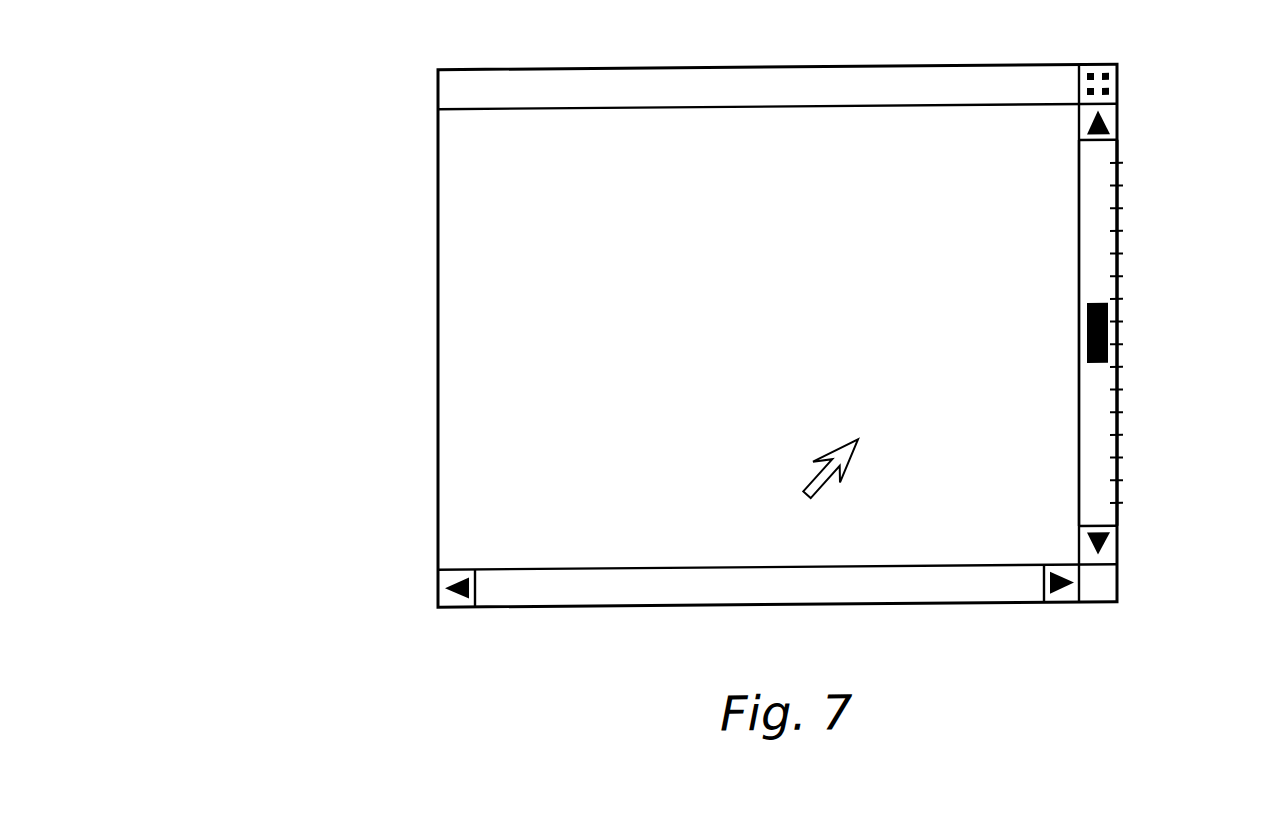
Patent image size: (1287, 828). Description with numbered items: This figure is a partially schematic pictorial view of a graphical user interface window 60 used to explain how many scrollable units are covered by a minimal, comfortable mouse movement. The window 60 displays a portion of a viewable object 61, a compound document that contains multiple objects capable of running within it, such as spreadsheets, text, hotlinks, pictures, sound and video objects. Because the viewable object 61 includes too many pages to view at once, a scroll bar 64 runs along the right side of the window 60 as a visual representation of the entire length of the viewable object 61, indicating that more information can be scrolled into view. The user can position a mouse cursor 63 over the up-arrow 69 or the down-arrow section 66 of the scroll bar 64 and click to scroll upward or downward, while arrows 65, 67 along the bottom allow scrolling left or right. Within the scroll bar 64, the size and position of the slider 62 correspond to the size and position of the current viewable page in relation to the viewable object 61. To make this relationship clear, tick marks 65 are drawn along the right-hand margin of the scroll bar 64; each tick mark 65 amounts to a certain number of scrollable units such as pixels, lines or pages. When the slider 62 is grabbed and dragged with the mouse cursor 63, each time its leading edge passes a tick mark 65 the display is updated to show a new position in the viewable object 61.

The graphical user interface window 60 is at (345, 649).
The viewable object 61 is at (462, 139).
The slider 62 is at (1110, 340).
The mouse cursor 63 is at (835, 446).
The scroll bar 64 is at (1103, 515).
The tick marks 65 is at (820, 409).
The down-arrow section 66 is at (1112, 548).
The arrow 67 is at (1068, 594).
The up-arrow 69 is at (1117, 127).